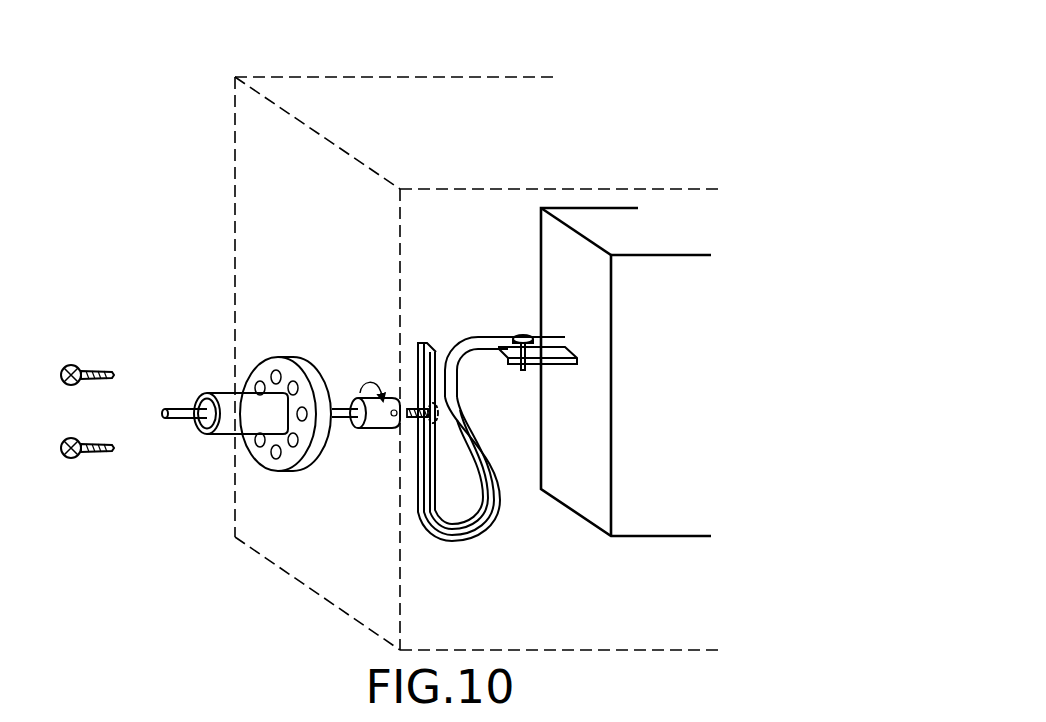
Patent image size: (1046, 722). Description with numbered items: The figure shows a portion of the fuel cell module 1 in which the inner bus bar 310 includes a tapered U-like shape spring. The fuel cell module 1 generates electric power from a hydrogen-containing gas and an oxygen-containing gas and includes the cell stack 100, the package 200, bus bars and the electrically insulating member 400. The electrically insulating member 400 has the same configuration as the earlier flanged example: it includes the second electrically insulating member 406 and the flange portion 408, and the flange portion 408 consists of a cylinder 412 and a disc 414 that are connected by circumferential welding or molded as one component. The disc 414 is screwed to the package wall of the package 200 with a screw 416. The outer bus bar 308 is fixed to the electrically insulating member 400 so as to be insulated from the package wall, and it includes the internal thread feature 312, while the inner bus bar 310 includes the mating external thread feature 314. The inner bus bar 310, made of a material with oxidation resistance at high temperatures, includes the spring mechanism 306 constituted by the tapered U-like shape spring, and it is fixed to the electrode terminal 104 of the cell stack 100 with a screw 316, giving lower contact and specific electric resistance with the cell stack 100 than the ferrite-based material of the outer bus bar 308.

The fuel cell module 1 is at (601, 67).
The cell stack 100 is at (663, 530).
The electrode terminal 104 is at (558, 366).
The package 200 is at (380, 77).
The spring mechanism 306 is at (458, 541).
The outer bus bar 308 is at (168, 437).
The inner bus bar 310 is at (458, 328).
The internal thread feature 312 is at (368, 430).
The external thread feature 314 is at (442, 420).
The screw 316 is at (523, 335).
The electrically insulating member 400 is at (145, 309).
The second electrically insulating member 406 is at (195, 400).
The flange portion 408 is at (205, 386).
The cylinder 412 is at (222, 432).
The disc 414 is at (293, 355).
The screw 416 is at (83, 366).